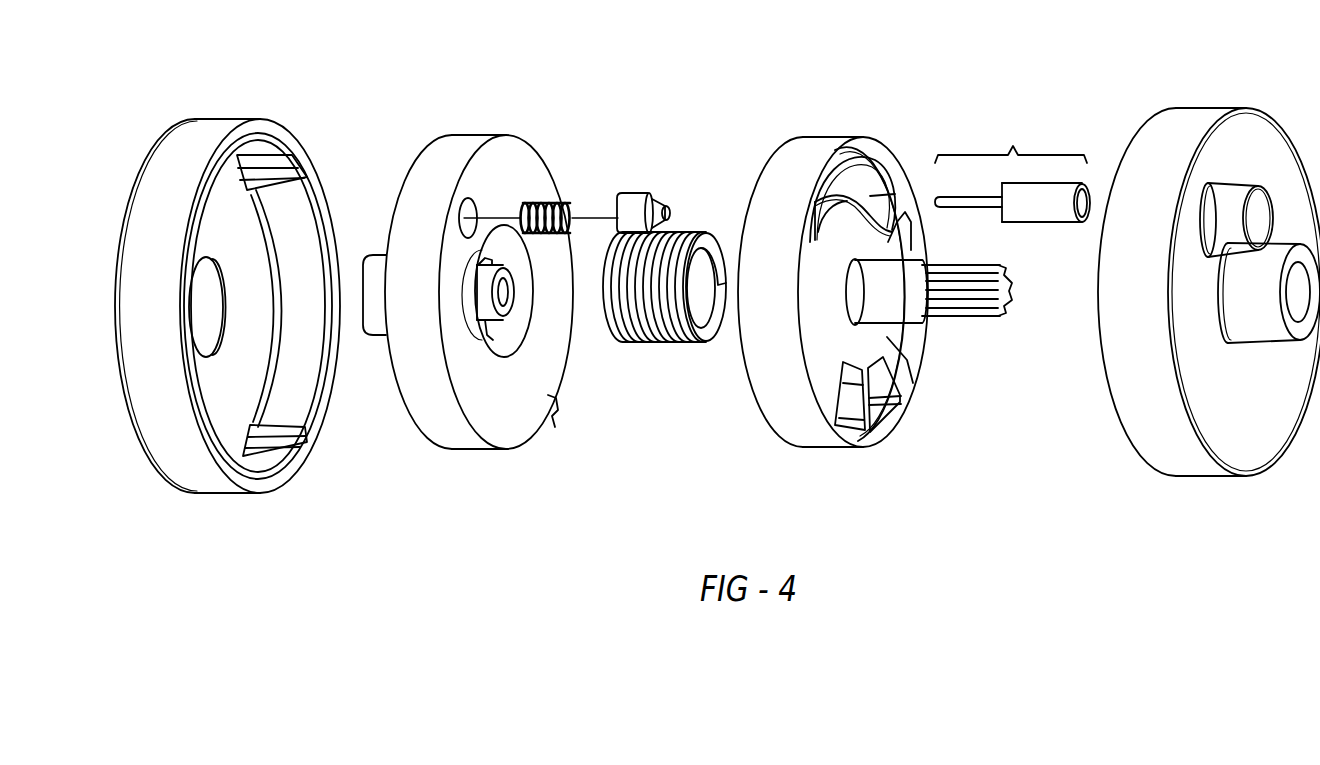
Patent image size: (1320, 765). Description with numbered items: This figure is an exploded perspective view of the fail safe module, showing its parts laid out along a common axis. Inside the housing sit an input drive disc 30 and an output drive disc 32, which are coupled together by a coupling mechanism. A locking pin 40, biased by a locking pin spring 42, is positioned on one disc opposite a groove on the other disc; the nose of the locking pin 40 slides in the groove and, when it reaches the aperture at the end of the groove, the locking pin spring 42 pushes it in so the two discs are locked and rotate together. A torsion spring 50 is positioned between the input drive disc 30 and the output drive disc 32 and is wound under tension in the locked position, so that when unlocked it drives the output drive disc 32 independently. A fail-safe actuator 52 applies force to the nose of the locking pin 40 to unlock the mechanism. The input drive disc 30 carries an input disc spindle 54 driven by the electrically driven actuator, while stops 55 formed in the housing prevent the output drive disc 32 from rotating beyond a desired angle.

The input drive disc 30 is at (820, 437).
The output drive disc 32 is at (433, 413).
The locking pin 40 is at (634, 212).
The locking pin spring 42 is at (534, 212).
The torsion spring 50 is at (650, 343).
The fail-safe actuator 52 is at (1012, 162).
The input disc spindle 54 is at (1000, 287).
The stops 55 is at (278, 180).